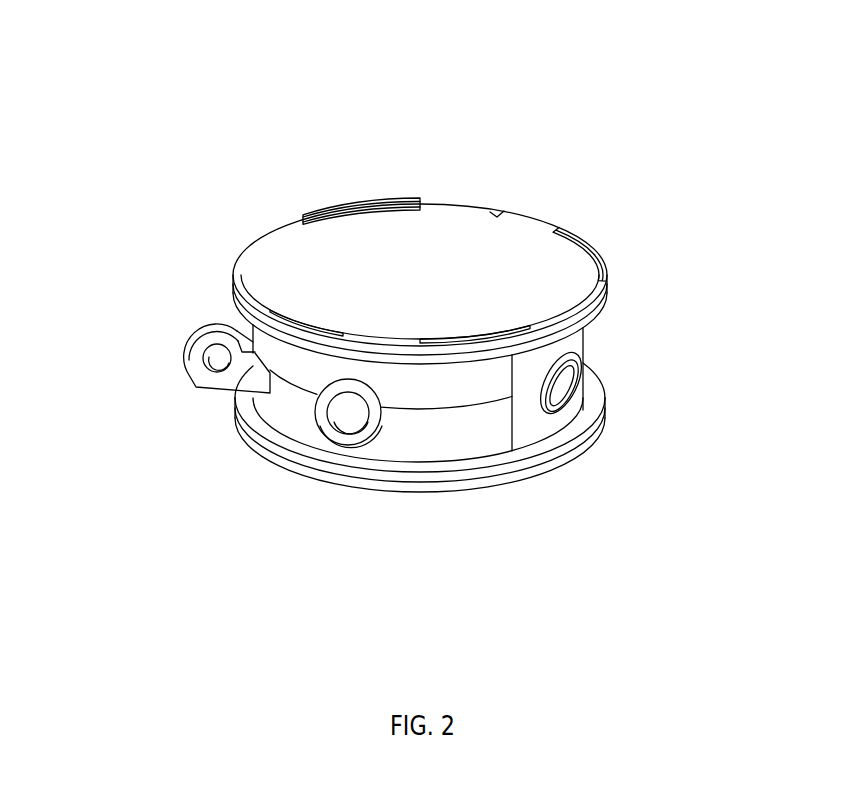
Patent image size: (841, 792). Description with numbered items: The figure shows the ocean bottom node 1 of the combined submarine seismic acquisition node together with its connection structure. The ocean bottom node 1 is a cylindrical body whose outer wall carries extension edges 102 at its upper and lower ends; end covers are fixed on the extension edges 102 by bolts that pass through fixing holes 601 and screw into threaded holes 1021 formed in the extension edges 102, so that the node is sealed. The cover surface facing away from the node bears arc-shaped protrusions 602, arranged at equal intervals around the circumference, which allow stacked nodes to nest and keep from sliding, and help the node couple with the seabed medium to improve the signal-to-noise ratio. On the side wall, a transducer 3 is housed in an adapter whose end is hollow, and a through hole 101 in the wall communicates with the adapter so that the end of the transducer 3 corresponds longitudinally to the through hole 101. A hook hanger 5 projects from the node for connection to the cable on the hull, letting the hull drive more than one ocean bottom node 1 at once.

The ocean bottom node 1 is at (483, 432).
The transducer 3 is at (343, 413).
The hook hanger 5 is at (210, 385).
The through hole 101 is at (343, 387).
The extension edge 102 is at (590, 403).
The threaded hole 1021 is at (475, 460).
The fixing hole 601 is at (500, 213).
The arc-shaped protrusion 602 is at (338, 205).